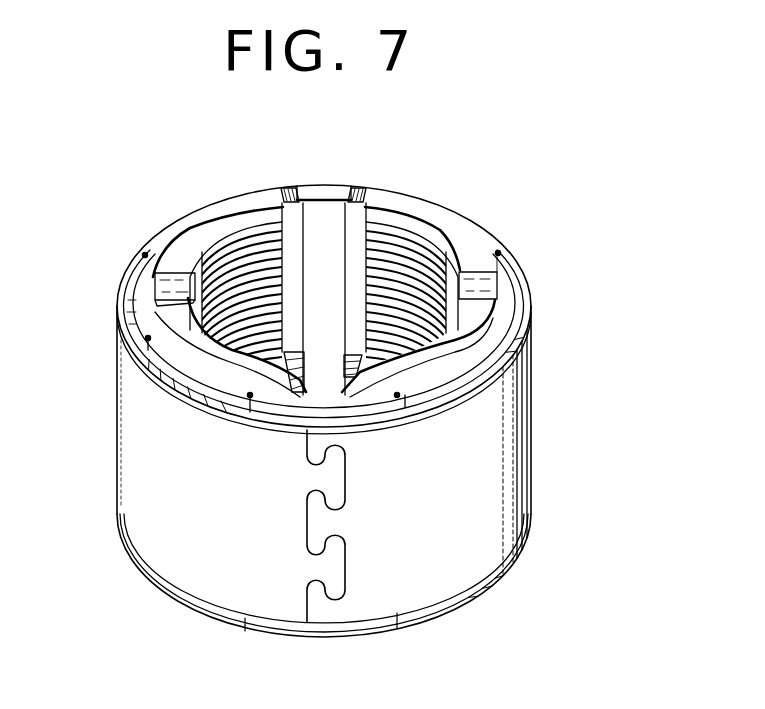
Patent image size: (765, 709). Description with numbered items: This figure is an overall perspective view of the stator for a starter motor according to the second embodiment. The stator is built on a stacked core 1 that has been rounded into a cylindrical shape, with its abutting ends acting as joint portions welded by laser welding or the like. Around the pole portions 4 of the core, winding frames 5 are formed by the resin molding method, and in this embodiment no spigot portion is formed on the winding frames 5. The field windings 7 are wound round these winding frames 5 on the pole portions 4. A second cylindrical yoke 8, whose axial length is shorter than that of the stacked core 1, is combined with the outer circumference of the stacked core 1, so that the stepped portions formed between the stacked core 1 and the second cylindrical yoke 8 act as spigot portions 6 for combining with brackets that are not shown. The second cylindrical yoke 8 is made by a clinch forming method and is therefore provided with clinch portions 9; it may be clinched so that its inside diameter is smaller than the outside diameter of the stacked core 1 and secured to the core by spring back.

The stacked core 1 is at (518, 273).
The pole portions 4 is at (281, 230).
The winding frames 5 is at (296, 232).
The spigot portions 6 is at (124, 294).
The field windings 7 is at (247, 198).
The second cylindrical yoke 8 is at (513, 440).
The clinch portions 9 is at (306, 520).